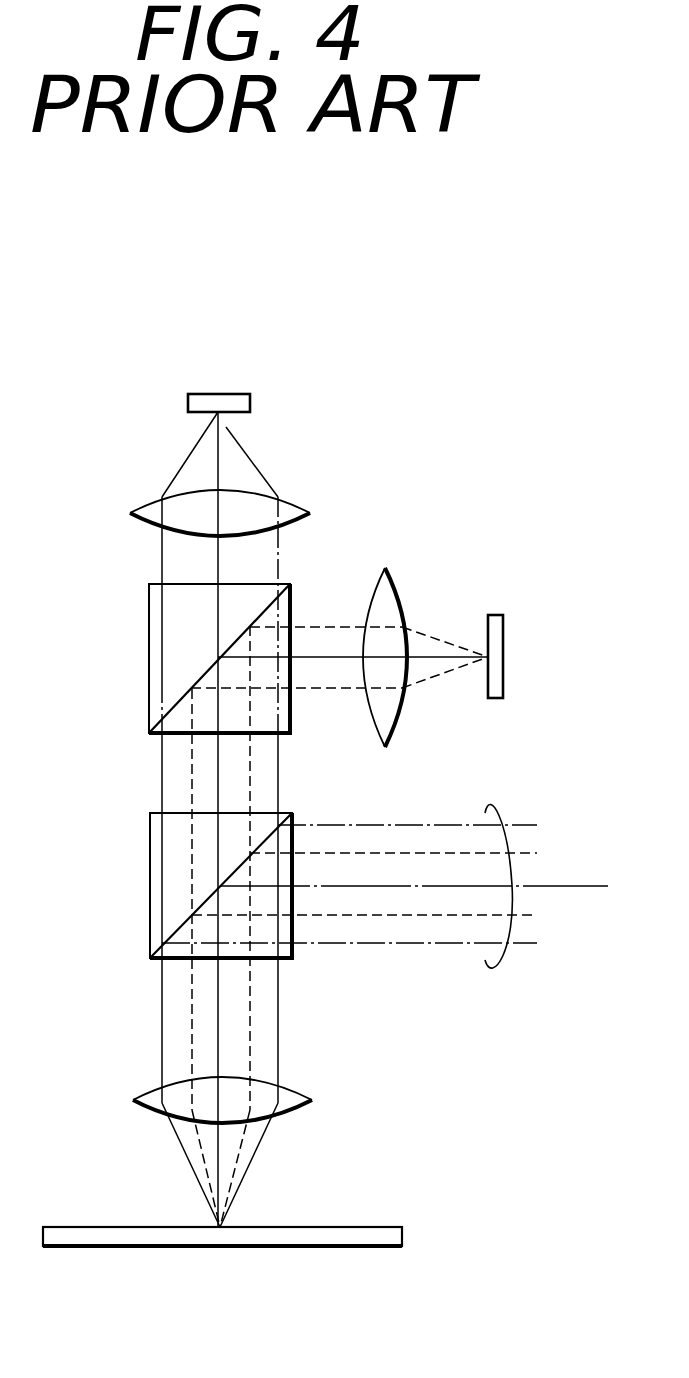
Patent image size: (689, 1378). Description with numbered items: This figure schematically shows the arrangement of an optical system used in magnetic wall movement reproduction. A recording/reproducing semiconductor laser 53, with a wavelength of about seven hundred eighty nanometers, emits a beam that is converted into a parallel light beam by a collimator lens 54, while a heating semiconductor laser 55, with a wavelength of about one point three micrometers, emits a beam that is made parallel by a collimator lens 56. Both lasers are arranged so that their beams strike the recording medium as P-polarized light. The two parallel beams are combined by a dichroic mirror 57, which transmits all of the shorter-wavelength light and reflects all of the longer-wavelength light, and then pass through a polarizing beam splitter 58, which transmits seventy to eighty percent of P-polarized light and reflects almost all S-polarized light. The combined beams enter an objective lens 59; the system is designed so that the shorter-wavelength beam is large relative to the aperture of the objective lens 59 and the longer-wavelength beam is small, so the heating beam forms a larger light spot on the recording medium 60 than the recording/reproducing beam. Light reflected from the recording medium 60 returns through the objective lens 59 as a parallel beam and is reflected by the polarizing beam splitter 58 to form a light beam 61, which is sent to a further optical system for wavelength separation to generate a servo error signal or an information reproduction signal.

The recording/reproducing semiconductor laser 53 is at (250, 399).
The collimator lens 54 is at (310, 512).
The heating semiconductor laser 55 is at (496, 614).
The collimator lens 56 is at (400, 598).
The dichroic mirror 57 is at (149, 634).
The polarizing beam splitter 58 is at (150, 835).
The objective lens 59 is at (312, 1100).
The recording medium 60 is at (404, 1232).
The light beam 61 is at (505, 962).